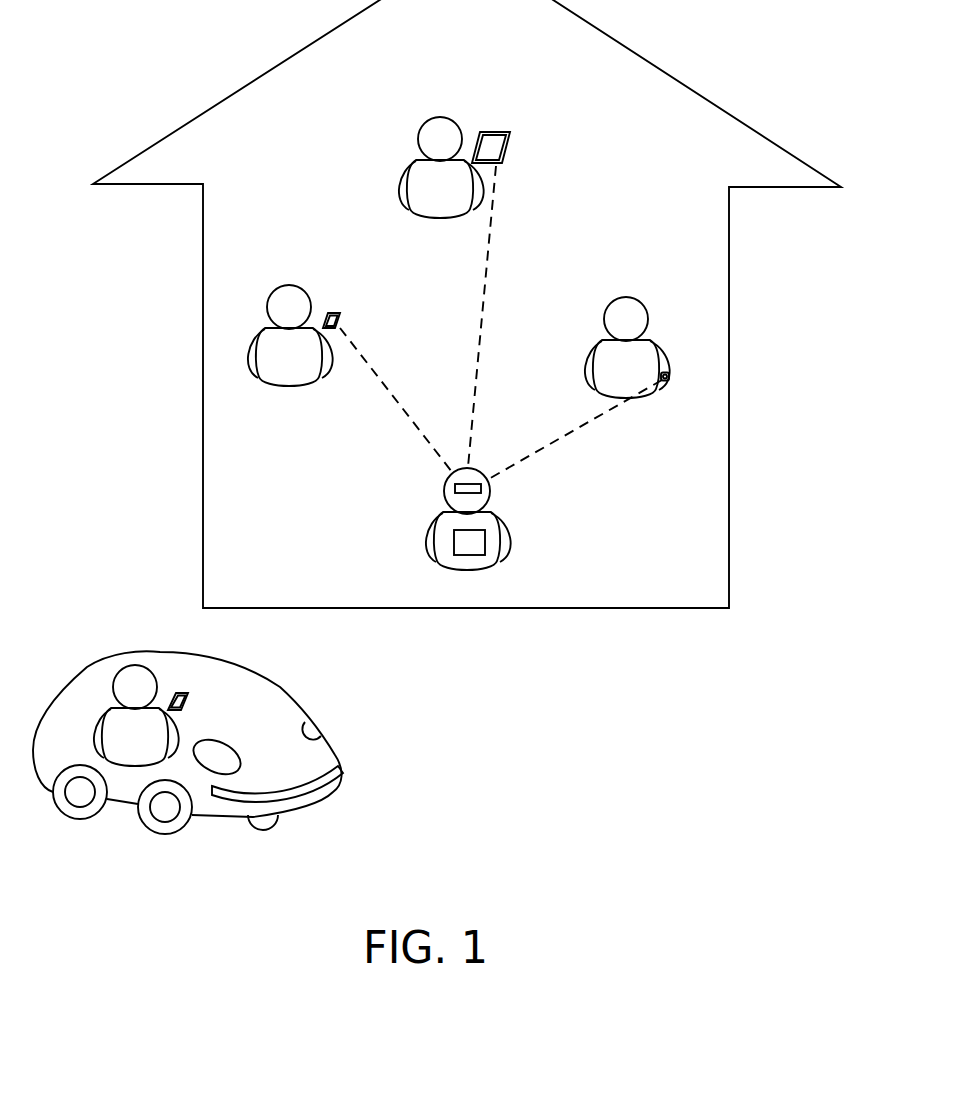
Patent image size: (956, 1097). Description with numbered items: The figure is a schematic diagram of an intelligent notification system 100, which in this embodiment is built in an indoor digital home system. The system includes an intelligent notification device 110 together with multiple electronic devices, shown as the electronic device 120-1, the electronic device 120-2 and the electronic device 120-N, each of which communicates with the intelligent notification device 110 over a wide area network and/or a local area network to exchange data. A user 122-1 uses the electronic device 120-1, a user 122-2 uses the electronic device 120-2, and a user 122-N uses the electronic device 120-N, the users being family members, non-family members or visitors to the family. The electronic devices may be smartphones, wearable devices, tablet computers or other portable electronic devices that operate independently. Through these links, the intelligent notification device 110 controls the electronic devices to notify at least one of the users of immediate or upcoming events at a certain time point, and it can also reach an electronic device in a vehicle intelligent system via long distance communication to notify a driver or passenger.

The intelligent notification system 100 is at (765, 788).
The intelligent notification device 110 is at (490, 563).
The electronic device 120-1 is at (340, 313).
The electronic device 120-2 is at (668, 376).
The electronic device 120-N is at (500, 143).
The user 122-1 is at (287, 383).
The user 122-2 is at (610, 368).
The user 122-N is at (442, 207).